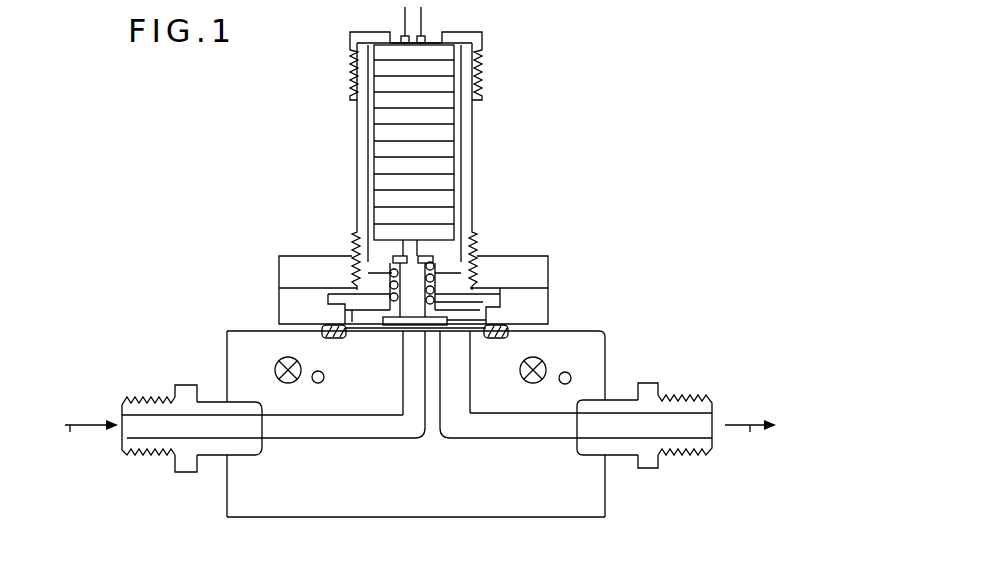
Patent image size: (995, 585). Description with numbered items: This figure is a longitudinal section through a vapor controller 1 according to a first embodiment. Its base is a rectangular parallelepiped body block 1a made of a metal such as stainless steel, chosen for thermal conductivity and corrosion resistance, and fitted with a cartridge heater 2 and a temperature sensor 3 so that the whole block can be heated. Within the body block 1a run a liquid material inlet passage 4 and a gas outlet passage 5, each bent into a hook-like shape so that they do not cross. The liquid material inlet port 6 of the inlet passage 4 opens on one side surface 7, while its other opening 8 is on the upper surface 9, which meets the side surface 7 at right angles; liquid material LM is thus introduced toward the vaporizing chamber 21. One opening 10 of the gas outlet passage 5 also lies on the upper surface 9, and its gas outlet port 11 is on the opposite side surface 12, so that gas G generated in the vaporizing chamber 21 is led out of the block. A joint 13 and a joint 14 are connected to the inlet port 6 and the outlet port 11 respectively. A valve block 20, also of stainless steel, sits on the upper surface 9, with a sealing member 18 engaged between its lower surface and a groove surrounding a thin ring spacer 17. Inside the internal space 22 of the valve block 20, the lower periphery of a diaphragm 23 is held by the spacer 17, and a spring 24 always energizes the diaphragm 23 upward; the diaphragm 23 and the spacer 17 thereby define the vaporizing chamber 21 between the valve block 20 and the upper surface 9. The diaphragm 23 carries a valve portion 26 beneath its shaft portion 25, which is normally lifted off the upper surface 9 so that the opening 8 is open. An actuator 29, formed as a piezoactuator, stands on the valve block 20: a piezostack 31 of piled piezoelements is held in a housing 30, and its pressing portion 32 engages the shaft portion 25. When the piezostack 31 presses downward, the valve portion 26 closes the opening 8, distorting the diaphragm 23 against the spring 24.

The vapor controller 1 is at (606, 313).
The body block 1a is at (403, 517).
The cartridge heater 2 is at (605, 370).
The temperature sensor 3 is at (325, 380).
The liquid material inlet passage 4 is at (365, 422).
The gas outlet passage 5 is at (518, 440).
The liquid material inlet port 6 is at (245, 425).
The side surface 7 is at (227, 368).
The opening 8 is at (410, 348).
The upper surface 9 is at (250, 329).
The opening 10 is at (455, 337).
The gas outlet port 11 is at (586, 455).
The side surface 12 is at (606, 390).
The joint 13 is at (172, 465).
The joint 14 is at (665, 470).
The ring spacer 17 is at (385, 318).
The sealing member 18 is at (328, 328).
The valve block 20 is at (550, 256).
The vaporizing chamber 21 is at (445, 320).
The internal space 22 is at (438, 312).
The diaphragm 23 is at (398, 262).
The spring 24 is at (440, 265).
The shaft portion 25 is at (414, 245).
The valve portion 26 is at (393, 290).
The actuator 29 is at (355, 95).
The housing 30 is at (475, 125).
The piezostack 31 is at (455, 83).
The pressing portion 32 is at (410, 237).